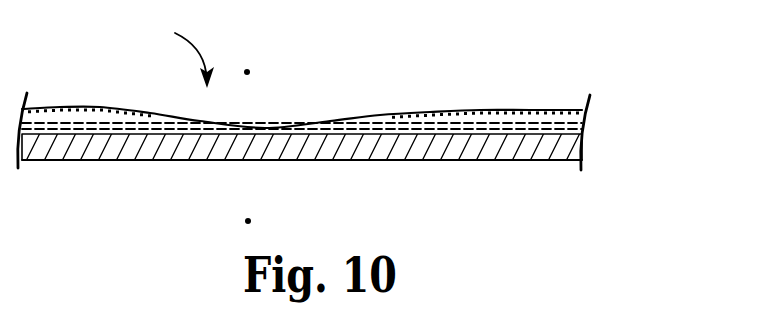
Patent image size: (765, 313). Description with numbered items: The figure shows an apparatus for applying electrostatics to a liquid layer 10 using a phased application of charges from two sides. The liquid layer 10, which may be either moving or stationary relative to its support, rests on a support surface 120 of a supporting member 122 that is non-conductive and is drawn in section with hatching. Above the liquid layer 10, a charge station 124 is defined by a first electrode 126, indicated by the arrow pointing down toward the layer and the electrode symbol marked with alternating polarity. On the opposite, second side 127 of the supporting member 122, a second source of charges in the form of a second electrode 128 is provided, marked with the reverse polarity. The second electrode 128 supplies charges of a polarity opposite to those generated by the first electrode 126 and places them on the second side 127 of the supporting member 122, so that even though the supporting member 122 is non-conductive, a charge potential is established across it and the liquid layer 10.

The liquid layer 10 is at (334, 140).
The support surface 120 is at (95, 130).
The supporting member 122 is at (334, 176).
The charge station 124 is at (173, 49).
The electrode 126 is at (247, 70).
The second side 127 is at (142, 162).
The electrode 128 is at (246, 222).